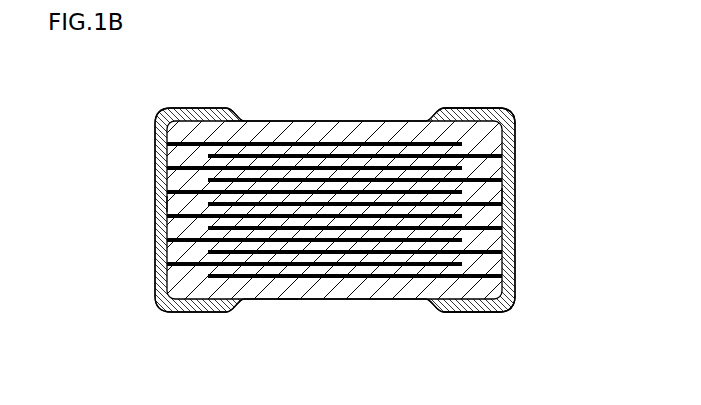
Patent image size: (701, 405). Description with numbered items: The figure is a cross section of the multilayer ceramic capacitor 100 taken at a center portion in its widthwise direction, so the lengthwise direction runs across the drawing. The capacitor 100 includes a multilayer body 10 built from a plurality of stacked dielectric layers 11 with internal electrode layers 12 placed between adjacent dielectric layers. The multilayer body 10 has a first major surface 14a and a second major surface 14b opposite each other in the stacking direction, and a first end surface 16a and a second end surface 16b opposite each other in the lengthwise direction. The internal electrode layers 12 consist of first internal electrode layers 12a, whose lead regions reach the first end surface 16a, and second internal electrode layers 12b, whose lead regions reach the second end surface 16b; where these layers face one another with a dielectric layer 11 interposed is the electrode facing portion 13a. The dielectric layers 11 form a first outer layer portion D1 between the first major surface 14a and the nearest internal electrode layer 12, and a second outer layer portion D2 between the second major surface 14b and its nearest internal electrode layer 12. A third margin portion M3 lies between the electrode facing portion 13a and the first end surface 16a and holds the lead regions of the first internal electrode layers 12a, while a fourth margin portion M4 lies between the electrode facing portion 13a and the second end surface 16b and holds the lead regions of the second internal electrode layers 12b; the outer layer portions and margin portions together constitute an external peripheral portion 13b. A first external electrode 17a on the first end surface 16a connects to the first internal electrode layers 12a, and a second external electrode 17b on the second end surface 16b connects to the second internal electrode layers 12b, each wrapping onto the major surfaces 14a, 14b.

The multilayer ceramic capacitor 100 is at (568, 69).
The multilayer body 10 is at (345, 122).
The dielectric layer 11 is at (373, 140).
The internal electrode layer 12 is at (334, 167).
The first internal electrode layer 12a is at (318, 140).
The second internal electrode layer 12b is at (280, 140).
The electrode facing portion 13a is at (517, 128).
The external peripheral portion 13b is at (518, 285).
The first major surface 14a is at (405, 135).
The second major surface 14b is at (415, 300).
The first end surface 16a is at (158, 237).
The second end surface 16b is at (514, 226).
The first external electrode 17a is at (160, 172).
The second external electrode 17b is at (503, 163).
The third margin portion M3 is at (180, 204).
The fourth margin portion M4 is at (512, 195).
The first outer layer portion D1 is at (232, 132).
The second outer layer portion D2 is at (287, 282).